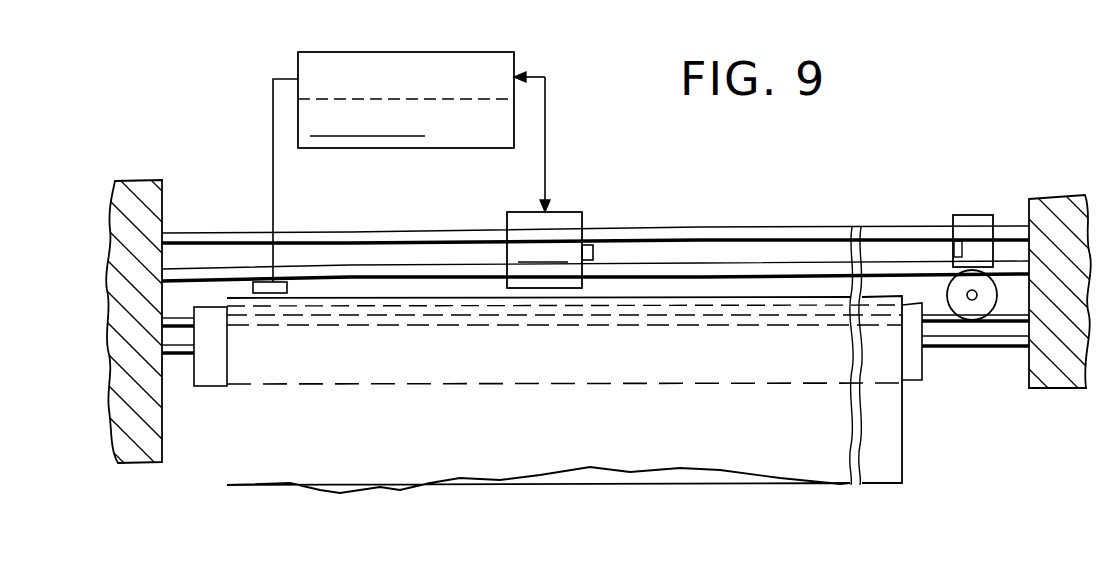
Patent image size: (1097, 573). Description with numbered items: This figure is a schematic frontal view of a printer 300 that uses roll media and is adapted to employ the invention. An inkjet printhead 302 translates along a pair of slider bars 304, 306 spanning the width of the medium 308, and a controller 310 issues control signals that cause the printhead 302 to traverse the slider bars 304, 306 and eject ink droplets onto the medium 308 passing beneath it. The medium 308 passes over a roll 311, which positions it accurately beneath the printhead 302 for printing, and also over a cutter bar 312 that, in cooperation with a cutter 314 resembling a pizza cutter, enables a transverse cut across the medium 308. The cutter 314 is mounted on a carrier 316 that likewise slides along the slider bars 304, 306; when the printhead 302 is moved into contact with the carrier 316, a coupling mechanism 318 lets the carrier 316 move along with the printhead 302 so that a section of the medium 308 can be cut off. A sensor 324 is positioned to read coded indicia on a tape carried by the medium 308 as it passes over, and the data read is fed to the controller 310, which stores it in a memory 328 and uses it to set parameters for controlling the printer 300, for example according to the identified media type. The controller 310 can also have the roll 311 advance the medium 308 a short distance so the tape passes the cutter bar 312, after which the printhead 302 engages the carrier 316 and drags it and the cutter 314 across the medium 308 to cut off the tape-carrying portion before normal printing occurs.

The printer 300 is at (836, 147).
The inkjet printhead 302 is at (544, 250).
The slider bar 304 is at (735, 207).
The slider bar 306 is at (808, 265).
The medium 308 is at (582, 444).
The controller 310 is at (514, 58).
The roll 311 is at (206, 380).
The cutter bar 312 is at (195, 268).
The cutter 314 is at (966, 312).
The carrier 316 is at (976, 215).
The coupling mechanism 318 is at (594, 254).
The sensor 324 is at (290, 286).
The memory 328 is at (442, 148).